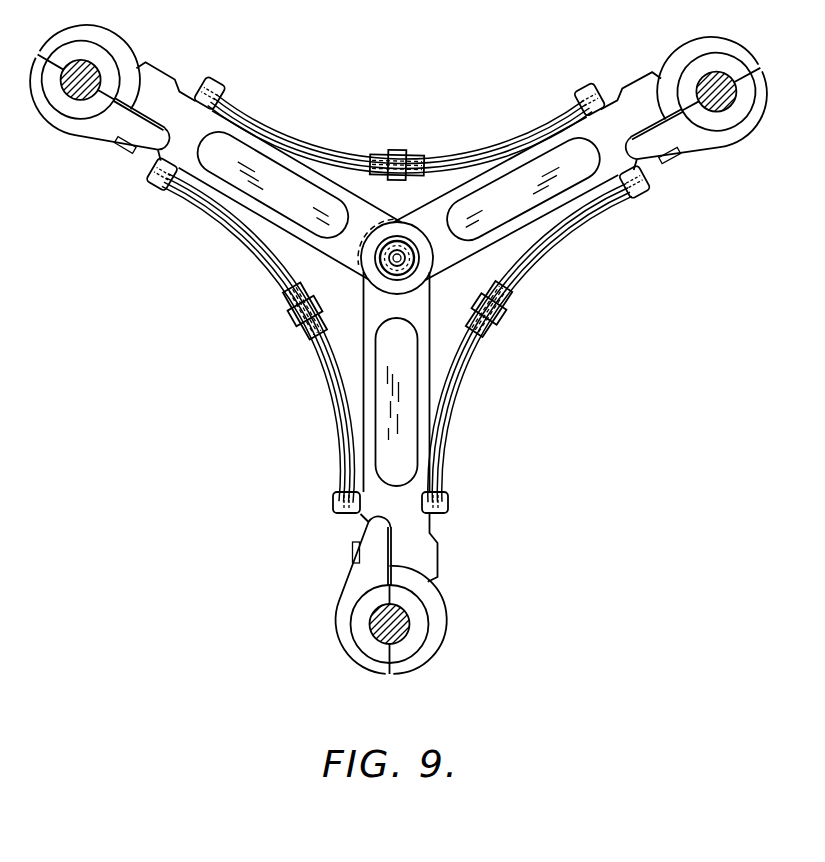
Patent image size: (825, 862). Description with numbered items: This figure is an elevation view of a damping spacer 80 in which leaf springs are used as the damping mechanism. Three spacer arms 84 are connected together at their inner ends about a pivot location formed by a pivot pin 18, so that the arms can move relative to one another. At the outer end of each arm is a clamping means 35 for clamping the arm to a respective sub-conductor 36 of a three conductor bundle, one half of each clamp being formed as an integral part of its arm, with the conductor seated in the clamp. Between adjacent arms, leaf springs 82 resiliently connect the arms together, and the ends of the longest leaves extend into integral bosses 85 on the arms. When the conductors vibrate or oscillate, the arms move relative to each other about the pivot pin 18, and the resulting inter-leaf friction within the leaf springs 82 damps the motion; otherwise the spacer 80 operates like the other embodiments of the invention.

The pivot pin 18 is at (412, 247).
The clamping means 35 is at (442, 619).
The sub-conductor 36 is at (397, 633).
The damping spacer 80 is at (398, 339).
The leaf springs 82 is at (456, 150).
The spacer arms 84 is at (334, 259).
The integral bosses 85 is at (218, 86).